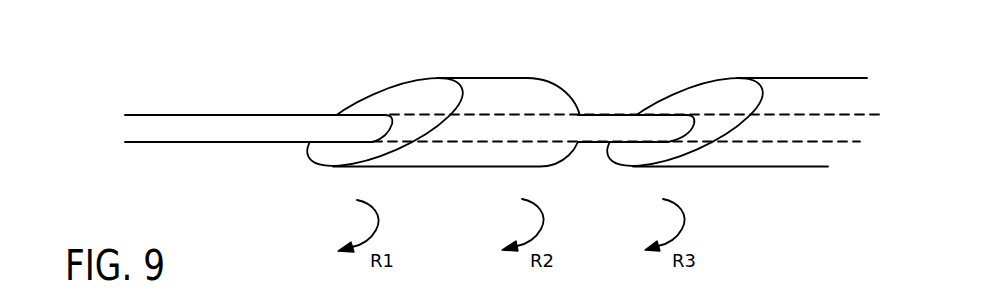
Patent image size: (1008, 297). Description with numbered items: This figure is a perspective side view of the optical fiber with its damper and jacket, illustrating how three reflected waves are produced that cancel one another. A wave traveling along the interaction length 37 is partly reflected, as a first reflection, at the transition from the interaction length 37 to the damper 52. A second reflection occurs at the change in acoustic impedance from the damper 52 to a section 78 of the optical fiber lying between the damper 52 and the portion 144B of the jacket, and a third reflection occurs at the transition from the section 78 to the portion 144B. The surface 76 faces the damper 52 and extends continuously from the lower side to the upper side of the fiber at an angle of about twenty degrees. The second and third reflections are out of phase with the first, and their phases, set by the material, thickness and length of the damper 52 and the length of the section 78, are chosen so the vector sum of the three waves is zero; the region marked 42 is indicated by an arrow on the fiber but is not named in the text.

The interaction length 37 is at (190, 124).
The distal portion 42 is at (303, 98).
The damper 52 is at (492, 86).
The surface 76 is at (695, 97).
The section of the optical fiber 78 is at (605, 118).
The portion of the jacket 144B is at (782, 80).